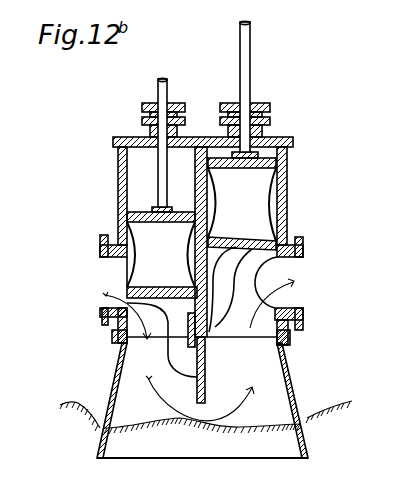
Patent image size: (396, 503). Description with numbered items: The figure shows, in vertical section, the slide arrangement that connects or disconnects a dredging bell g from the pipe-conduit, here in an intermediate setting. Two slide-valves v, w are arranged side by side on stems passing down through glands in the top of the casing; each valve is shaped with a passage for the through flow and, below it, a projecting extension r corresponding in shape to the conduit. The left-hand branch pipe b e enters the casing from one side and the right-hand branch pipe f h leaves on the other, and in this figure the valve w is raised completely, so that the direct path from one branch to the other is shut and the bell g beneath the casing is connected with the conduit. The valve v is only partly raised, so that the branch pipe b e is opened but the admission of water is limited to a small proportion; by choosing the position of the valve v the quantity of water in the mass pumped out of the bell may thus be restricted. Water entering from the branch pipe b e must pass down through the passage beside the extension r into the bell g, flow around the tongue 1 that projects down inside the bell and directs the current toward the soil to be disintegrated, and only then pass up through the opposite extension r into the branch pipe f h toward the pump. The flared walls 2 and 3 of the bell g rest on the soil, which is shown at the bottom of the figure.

The slide-valve v is at (162, 188).
The slide-valve w is at (245, 85).
The projecting extension r is at (168, 353).
The tongue 1 is at (205, 366).
The left funnel wall 2 is at (109, 416).
The right funnel wall 3 is at (297, 416).
The bell g is at (212, 456).
The branch pipe b is at (87, 276).
The pipe-conduit e is at (95, 306).
The pipe-conduit f is at (289, 277).
The branch pipe h is at (306, 309).